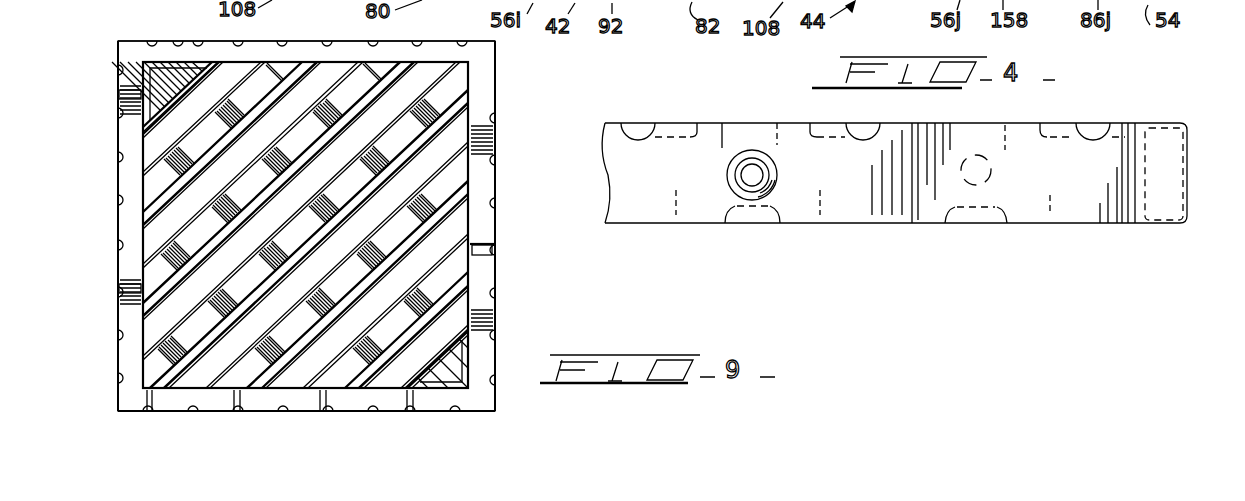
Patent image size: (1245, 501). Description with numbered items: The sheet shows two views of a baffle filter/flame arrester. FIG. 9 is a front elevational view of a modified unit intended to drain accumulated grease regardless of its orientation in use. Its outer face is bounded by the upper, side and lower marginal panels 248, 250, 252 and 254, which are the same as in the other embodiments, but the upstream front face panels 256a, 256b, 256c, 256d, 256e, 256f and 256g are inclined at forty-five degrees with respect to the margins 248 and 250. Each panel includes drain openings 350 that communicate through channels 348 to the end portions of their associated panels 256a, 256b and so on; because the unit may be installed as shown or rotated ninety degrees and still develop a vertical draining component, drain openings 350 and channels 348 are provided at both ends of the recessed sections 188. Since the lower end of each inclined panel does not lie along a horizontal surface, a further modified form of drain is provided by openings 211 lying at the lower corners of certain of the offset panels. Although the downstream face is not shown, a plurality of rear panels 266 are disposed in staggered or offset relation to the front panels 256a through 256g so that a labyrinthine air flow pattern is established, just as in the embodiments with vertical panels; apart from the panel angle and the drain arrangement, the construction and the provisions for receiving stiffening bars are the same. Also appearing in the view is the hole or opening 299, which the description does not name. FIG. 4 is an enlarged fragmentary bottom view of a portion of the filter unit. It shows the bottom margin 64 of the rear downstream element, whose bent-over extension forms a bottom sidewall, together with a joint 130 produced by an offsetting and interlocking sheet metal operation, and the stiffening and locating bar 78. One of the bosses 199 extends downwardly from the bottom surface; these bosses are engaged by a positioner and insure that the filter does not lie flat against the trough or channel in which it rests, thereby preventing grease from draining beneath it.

In FIG. 9, the upper marginal panel 248 is at (304, 50).
In FIG. 9, the side marginal panel 250 is at (385, 400).
In FIG. 9, the side marginal panel 252 is at (133, 362).
In FIG. 9, the lower marginal panel 254 is at (483, 183).
In FIG. 9, the drain openings 211 is at (380, 72).
In FIG. 9, the mounting holes 299 is at (440, 42).
In FIG. 9, the rear panels 266 is at (450, 143).
In FIG. 9, the channels 348 is at (473, 246).
In FIG. 9, the drain openings 350 is at (488, 251).
In FIG. 9, the recessed sections 188 is at (352, 400).
In FIG. 9, the front face panel 256a is at (165, 92).
In FIG. 9, the front face panel 256b is at (222, 125).
In FIG. 9, the front face panel 256c is at (380, 96).
In FIG. 9, the front face panel 256d is at (378, 153).
In FIG. 9, the front face panel 256e is at (370, 250).
In FIG. 9, the front face panel 256f is at (467, 303).
In FIG. 9, the front face panel 256g is at (445, 392).
In FIG. 4, the stiffening and locating bar 78 is at (1163, 190).
In FIG. 4, the bottom margin 64 is at (745, 223).
In FIG. 4, the bosses 199 is at (754, 175).
In FIG. 4, the joint 130 is at (997, 188).